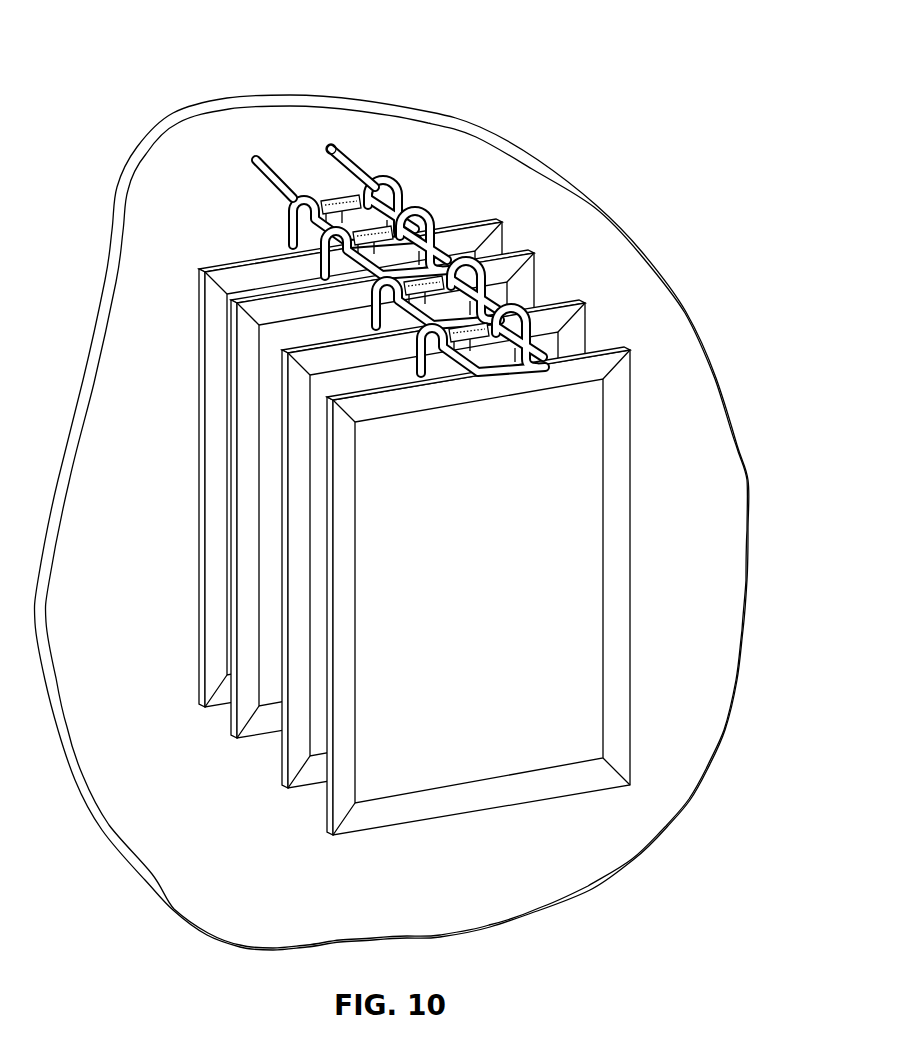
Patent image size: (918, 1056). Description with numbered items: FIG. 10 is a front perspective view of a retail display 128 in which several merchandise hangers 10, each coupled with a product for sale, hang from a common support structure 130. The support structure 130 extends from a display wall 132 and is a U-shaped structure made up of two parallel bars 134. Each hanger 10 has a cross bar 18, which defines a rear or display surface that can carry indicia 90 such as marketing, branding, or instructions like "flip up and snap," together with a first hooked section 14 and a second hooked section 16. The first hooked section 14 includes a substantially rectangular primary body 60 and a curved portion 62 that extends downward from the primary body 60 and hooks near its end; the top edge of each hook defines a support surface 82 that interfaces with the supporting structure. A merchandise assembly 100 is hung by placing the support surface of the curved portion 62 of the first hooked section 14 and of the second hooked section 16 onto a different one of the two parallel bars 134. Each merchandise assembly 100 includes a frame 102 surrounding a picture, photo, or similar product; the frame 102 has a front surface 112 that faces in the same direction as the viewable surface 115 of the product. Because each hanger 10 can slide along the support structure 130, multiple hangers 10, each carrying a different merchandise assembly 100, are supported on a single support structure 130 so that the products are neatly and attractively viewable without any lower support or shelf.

The retail display 128 is at (163, 64).
The display wall 132 is at (153, 193).
The parallel bars 134 is at (263, 167).
The support structure 130 is at (342, 157).
The cross bar 18 is at (340, 197).
The hanger 10 is at (396, 189).
The merchandise assembly 100 is at (541, 253).
The second hooked section 16 is at (540, 303).
The support surface 82 is at (527, 333).
The indicia 90 is at (380, 288).
The curved portion 62 is at (365, 335).
The first hooked section 14 is at (345, 372).
The primary body 60 is at (385, 390).
The frame 102 is at (620, 410).
The front surface 112 is at (620, 435).
The viewable surface 115 is at (578, 553).